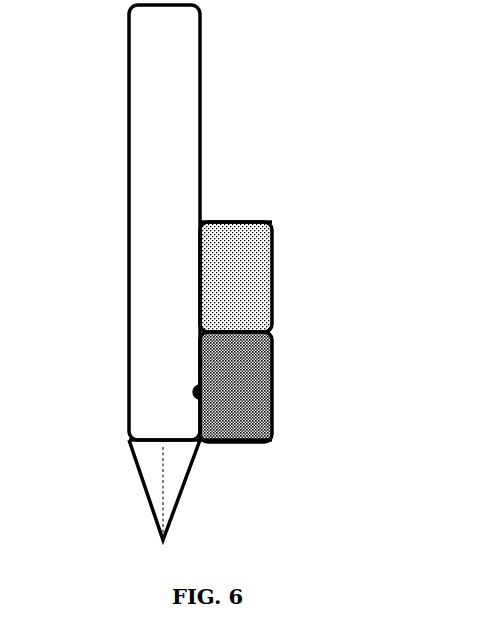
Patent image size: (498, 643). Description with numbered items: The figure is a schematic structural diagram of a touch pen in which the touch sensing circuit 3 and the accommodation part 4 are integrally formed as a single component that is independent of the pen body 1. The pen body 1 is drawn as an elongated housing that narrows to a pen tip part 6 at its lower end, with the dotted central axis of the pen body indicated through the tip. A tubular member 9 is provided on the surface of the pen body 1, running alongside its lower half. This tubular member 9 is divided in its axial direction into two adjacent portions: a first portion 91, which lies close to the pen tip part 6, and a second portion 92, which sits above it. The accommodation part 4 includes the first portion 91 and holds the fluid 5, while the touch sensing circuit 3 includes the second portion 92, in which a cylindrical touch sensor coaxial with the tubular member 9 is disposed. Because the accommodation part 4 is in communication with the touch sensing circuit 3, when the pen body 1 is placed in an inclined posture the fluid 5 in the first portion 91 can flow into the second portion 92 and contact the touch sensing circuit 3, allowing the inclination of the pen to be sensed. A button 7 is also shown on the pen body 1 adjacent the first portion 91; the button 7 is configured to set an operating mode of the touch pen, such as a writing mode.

The pen body 1 is at (200, 155).
The touch sensing circuit 3 is at (238, 222).
The accommodation part 4 is at (198, 358).
The fluid 5 is at (212, 371).
The pen tip part 6 is at (142, 485).
The button 7 is at (192, 396).
The tubular member 9 is at (280, 332).
The first portion 91 is at (257, 387).
The second portion 92 is at (279, 226).